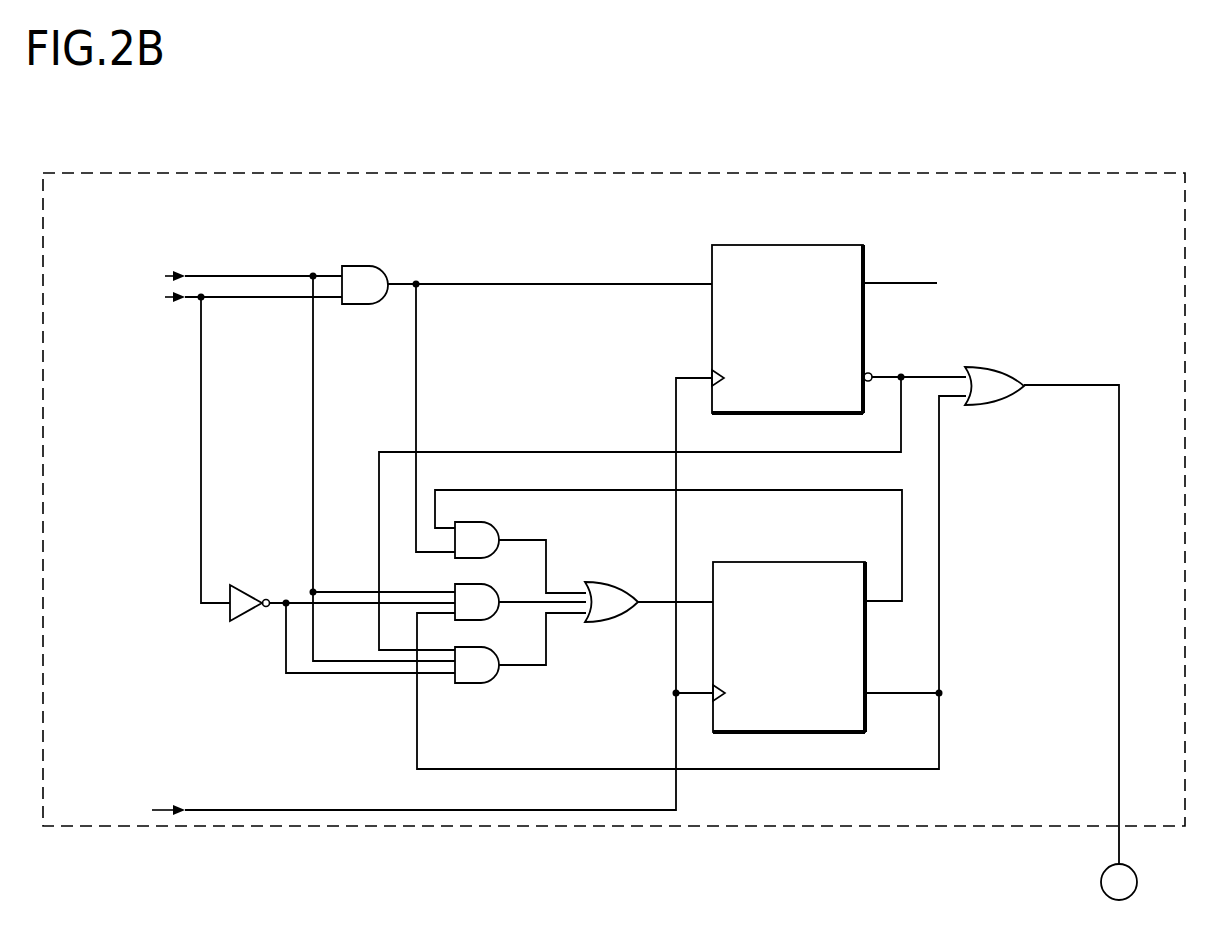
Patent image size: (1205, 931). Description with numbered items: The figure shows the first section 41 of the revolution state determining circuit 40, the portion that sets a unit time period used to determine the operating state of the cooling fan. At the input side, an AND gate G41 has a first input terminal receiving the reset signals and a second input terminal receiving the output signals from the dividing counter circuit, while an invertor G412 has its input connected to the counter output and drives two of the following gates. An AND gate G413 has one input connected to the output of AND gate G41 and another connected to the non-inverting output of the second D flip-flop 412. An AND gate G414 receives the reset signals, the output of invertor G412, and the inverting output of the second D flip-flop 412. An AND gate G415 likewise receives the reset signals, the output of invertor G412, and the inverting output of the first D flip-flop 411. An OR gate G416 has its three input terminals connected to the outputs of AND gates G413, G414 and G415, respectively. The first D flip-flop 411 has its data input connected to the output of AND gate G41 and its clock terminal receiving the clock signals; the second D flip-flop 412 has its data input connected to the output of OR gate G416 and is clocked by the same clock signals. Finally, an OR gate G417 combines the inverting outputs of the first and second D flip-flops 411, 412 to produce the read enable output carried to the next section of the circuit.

The revolution state determining circuit 40 is at (510, 150).
The first section 41 is at (608, 173).
The first D flip-flop 411 is at (788, 245).
The second D flip-flop 412 is at (788, 562).
The AND gate G41 is at (361, 270).
The invertor G412 is at (248, 587).
The AND gate G413 is at (472, 526).
The AND gate G414 is at (472, 588).
The AND gate G415 is at (472, 651).
The OR gate G416 is at (602, 586).
The OR gate G417 is at (987, 369).